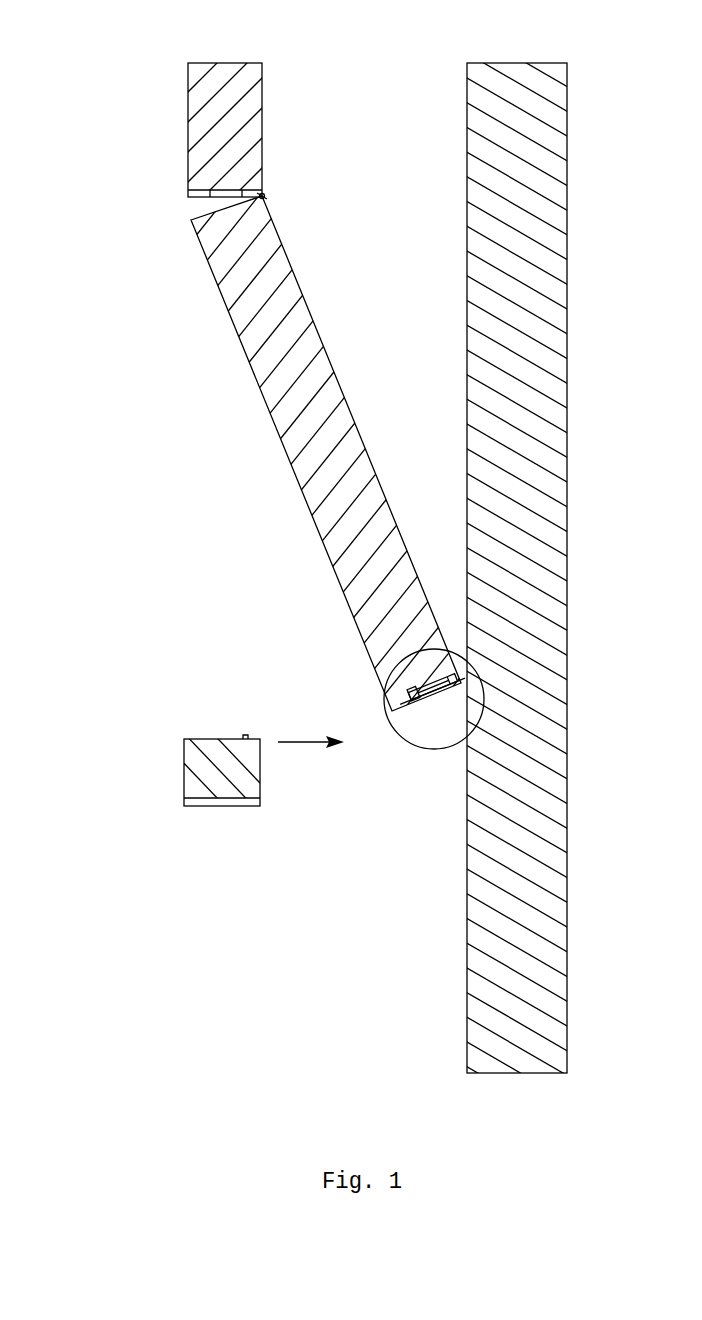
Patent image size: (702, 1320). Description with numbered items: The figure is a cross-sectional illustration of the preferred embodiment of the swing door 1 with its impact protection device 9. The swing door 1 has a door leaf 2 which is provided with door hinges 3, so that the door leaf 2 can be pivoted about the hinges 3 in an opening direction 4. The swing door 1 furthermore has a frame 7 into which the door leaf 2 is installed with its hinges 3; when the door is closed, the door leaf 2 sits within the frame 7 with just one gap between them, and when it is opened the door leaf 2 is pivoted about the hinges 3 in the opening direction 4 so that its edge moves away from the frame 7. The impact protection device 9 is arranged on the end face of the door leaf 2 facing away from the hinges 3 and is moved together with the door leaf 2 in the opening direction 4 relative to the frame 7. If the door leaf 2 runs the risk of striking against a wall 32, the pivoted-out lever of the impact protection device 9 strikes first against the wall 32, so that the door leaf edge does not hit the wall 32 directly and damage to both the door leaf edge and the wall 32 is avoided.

The swing door 1 is at (120, 486).
The door leaf 2 is at (303, 502).
The door hinges 3 is at (266, 194).
The opening direction 4 is at (310, 746).
The frame 7 is at (211, 740).
The impact protection device 9 is at (426, 722).
The wall 32 is at (468, 410).